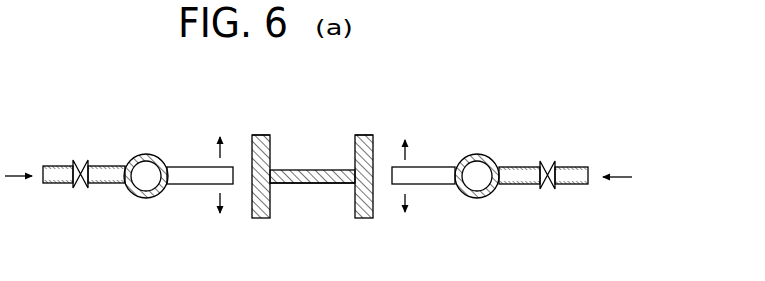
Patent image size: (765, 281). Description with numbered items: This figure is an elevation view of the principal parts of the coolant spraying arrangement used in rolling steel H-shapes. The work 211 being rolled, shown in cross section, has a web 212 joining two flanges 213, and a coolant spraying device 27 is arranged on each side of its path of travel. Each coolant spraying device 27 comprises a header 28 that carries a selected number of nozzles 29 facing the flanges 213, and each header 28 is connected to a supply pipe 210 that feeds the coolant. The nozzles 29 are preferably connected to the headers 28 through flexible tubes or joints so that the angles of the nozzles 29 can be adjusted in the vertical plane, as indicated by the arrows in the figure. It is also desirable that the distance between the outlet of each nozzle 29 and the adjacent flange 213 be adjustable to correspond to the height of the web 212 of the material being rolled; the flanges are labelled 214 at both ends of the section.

The coolant spraying device 27 is at (149, 153).
The header 28 is at (138, 193).
The nozzle 29 is at (190, 172).
The supply pipe 210 is at (100, 172).
The work 211 is at (293, 194).
The web 212 is at (331, 183).
The flange 213 is at (360, 135).
The flanges of H-section member 214 is at (258, 160).